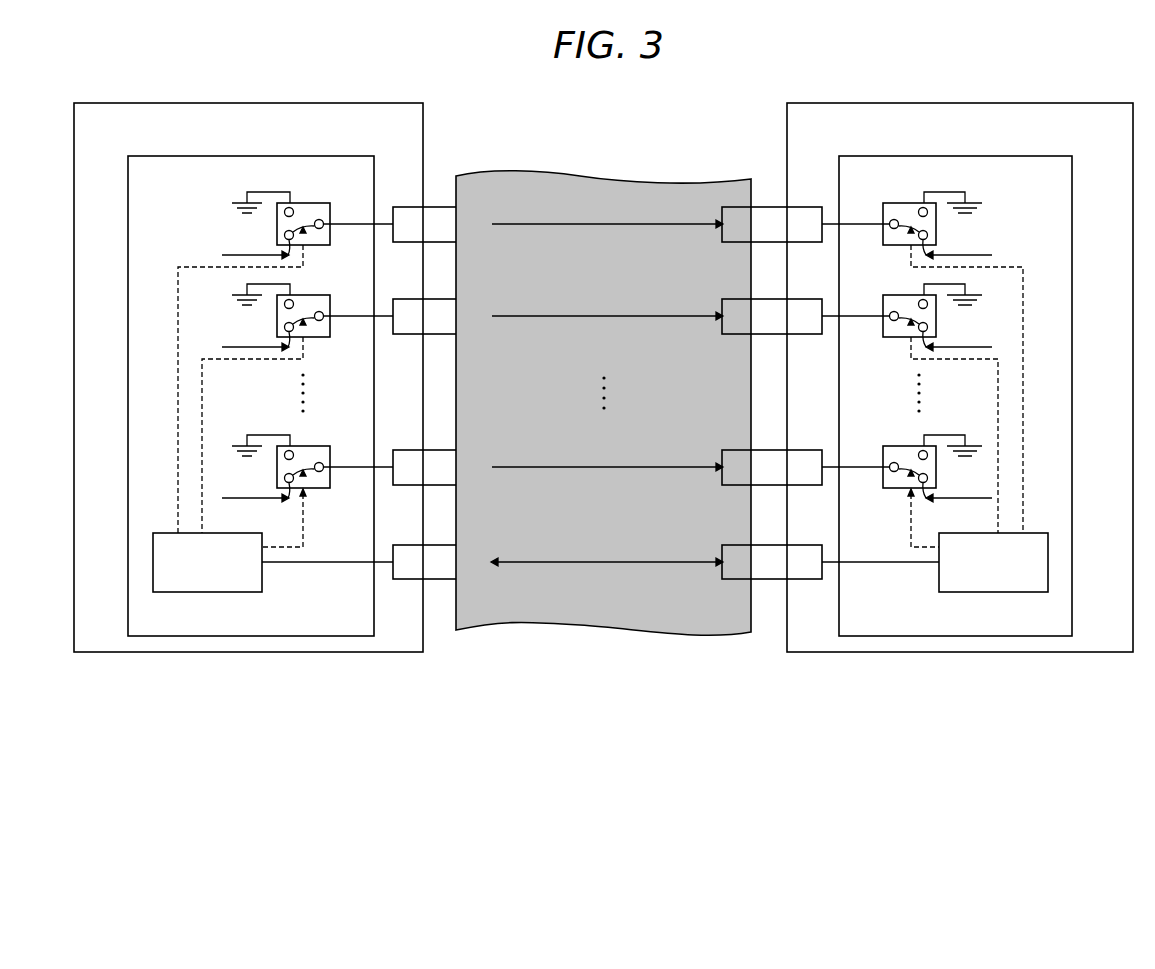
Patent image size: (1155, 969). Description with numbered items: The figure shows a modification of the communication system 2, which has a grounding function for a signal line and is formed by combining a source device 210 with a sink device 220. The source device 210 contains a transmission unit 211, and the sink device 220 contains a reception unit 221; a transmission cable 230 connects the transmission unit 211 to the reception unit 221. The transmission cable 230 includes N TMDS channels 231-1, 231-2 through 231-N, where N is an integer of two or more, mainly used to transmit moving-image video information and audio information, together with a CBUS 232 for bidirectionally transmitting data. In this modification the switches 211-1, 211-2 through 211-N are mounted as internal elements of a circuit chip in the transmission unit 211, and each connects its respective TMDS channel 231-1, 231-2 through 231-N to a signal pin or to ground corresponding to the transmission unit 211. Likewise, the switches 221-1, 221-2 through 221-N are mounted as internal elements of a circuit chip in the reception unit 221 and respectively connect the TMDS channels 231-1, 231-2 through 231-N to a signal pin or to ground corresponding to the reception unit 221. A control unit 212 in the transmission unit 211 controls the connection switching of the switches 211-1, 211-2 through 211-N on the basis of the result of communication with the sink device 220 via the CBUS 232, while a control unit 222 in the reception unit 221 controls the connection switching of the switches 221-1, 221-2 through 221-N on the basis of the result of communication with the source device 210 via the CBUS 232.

The communication system 2 is at (698, 758).
The source device 210 is at (283, 377).
The transmission unit 211 is at (310, 396).
The switch 211-1 is at (325, 202).
The switch 211-2 is at (325, 294).
The switch 211-N is at (325, 445).
The control unit 212 is at (273, 562).
The sink device 220 is at (927, 377).
The reception unit 221 is at (897, 396).
The switch 221-1 is at (891, 202).
The switch 221-2 is at (891, 294).
The switch 221-N is at (891, 445).
The control unit 222 is at (935, 562).
The transmission cable 230 is at (595, 188).
The TMDS channel 231-1 is at (607, 236).
The TMDS channel 231-2 is at (607, 328).
The TMDS channel 231-N is at (607, 478).
The CBUS 232 is at (607, 572).